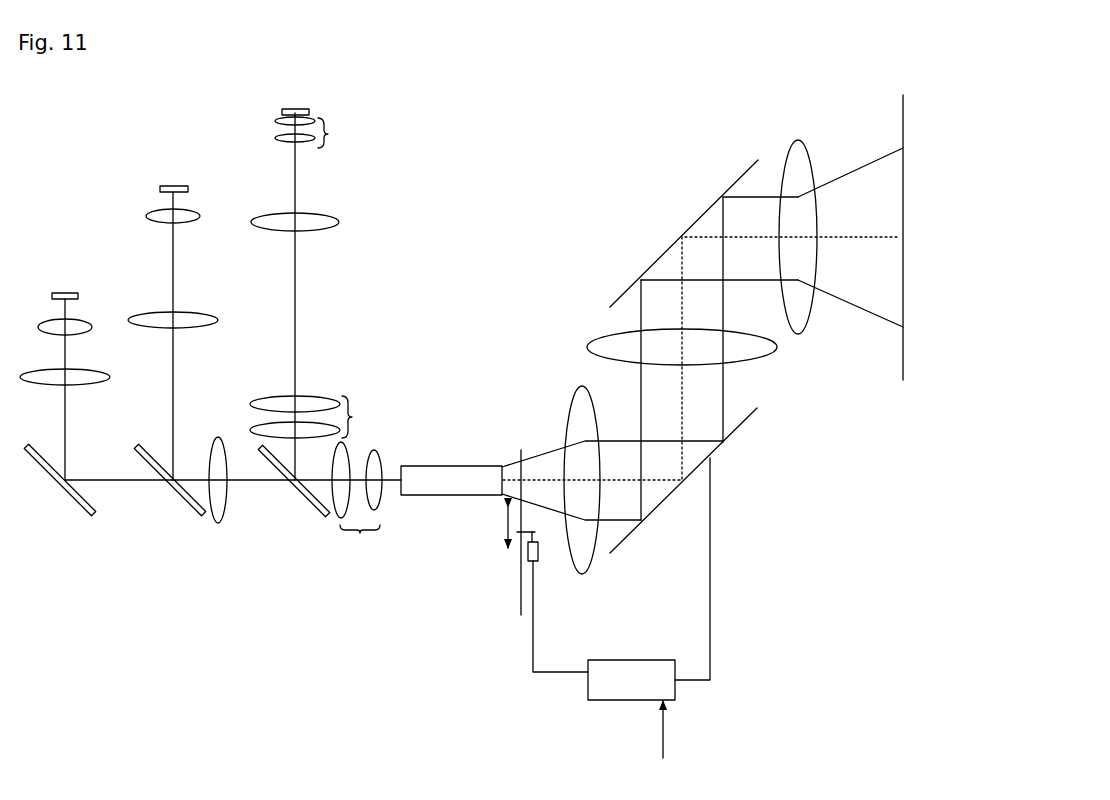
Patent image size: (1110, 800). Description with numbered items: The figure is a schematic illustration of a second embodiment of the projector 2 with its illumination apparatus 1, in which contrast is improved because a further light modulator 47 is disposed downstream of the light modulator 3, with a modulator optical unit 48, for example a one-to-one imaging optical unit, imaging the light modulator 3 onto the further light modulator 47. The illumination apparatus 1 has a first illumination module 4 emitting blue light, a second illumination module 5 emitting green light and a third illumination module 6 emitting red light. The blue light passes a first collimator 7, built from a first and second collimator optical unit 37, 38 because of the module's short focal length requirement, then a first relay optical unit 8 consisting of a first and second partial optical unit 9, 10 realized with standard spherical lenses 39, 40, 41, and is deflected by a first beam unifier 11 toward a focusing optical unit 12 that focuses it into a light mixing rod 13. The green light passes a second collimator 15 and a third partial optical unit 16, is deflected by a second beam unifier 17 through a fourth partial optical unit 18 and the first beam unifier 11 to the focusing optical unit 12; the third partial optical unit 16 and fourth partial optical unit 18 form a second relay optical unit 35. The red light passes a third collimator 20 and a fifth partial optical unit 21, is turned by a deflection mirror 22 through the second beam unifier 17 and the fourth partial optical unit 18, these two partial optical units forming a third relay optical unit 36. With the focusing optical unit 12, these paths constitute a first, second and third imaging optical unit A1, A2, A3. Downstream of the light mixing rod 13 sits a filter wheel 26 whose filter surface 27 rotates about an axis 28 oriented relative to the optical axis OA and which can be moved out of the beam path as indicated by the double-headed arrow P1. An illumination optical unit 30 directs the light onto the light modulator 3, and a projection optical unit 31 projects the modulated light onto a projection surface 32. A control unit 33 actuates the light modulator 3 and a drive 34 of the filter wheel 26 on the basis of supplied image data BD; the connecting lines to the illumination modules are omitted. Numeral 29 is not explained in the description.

The illumination apparatus 1 is at (73, 287).
The projector 2 is at (757, 410).
The light modulator 3 is at (740, 425).
The first illumination module 4 is at (305, 108).
The second illumination module 5 is at (173, 186).
The third illumination module 6 is at (56, 292).
The first collimator 7 is at (332, 133).
The first relay optical unit 8 is at (340, 228).
The first partial optical unit 9 is at (318, 214).
The second partial optical unit 10 is at (362, 417).
The first beam unifier 11 is at (305, 500).
The focusing optical unit 12 is at (357, 506).
The light mixing rod 13 is at (445, 497).
The second collimator 15 is at (160, 210).
The third partial optical unit 16 is at (140, 320).
The second beam unifier 17 is at (188, 505).
The fourth partial optical unit 18 is at (218, 523).
The third collimator 20 is at (88, 333).
The fifth partial optical unit 21 is at (90, 385).
The deflection mirror 22 is at (78, 508).
The filter wheel 26 is at (518, 598).
The filter surface 27 is at (518, 567).
The axis 28 is at (537, 527).
The deflection element 29 is at (401, 466).
The illumination optical unit 30 is at (587, 573).
The projection optical unit 31 is at (805, 330).
The projection surface 32 is at (897, 382).
The control unit 33 is at (613, 700).
The drive 34 is at (538, 553).
The second relay optical unit 35 is at (212, 318).
The third relay optical unit 36 is at (73, 390).
The first collimator optical unit 37 is at (276, 119).
The second collimator optical unit 38 is at (276, 138).
The spherical lens 39 is at (272, 218).
The spherical lens 40 is at (276, 402).
The spherical lens 41 is at (258, 428).
The further light modulator 47 is at (615, 300).
The modulator optical unit 48 is at (775, 360).
The first imaging optical unit A1 is at (337, 213).
The second imaging optical unit A2 is at (225, 320).
The third imaging optical unit A3 is at (88, 315).
The optical axis OA is at (513, 480).
The double-headed arrow P1 is at (506, 530).
The image data BD is at (663, 728).